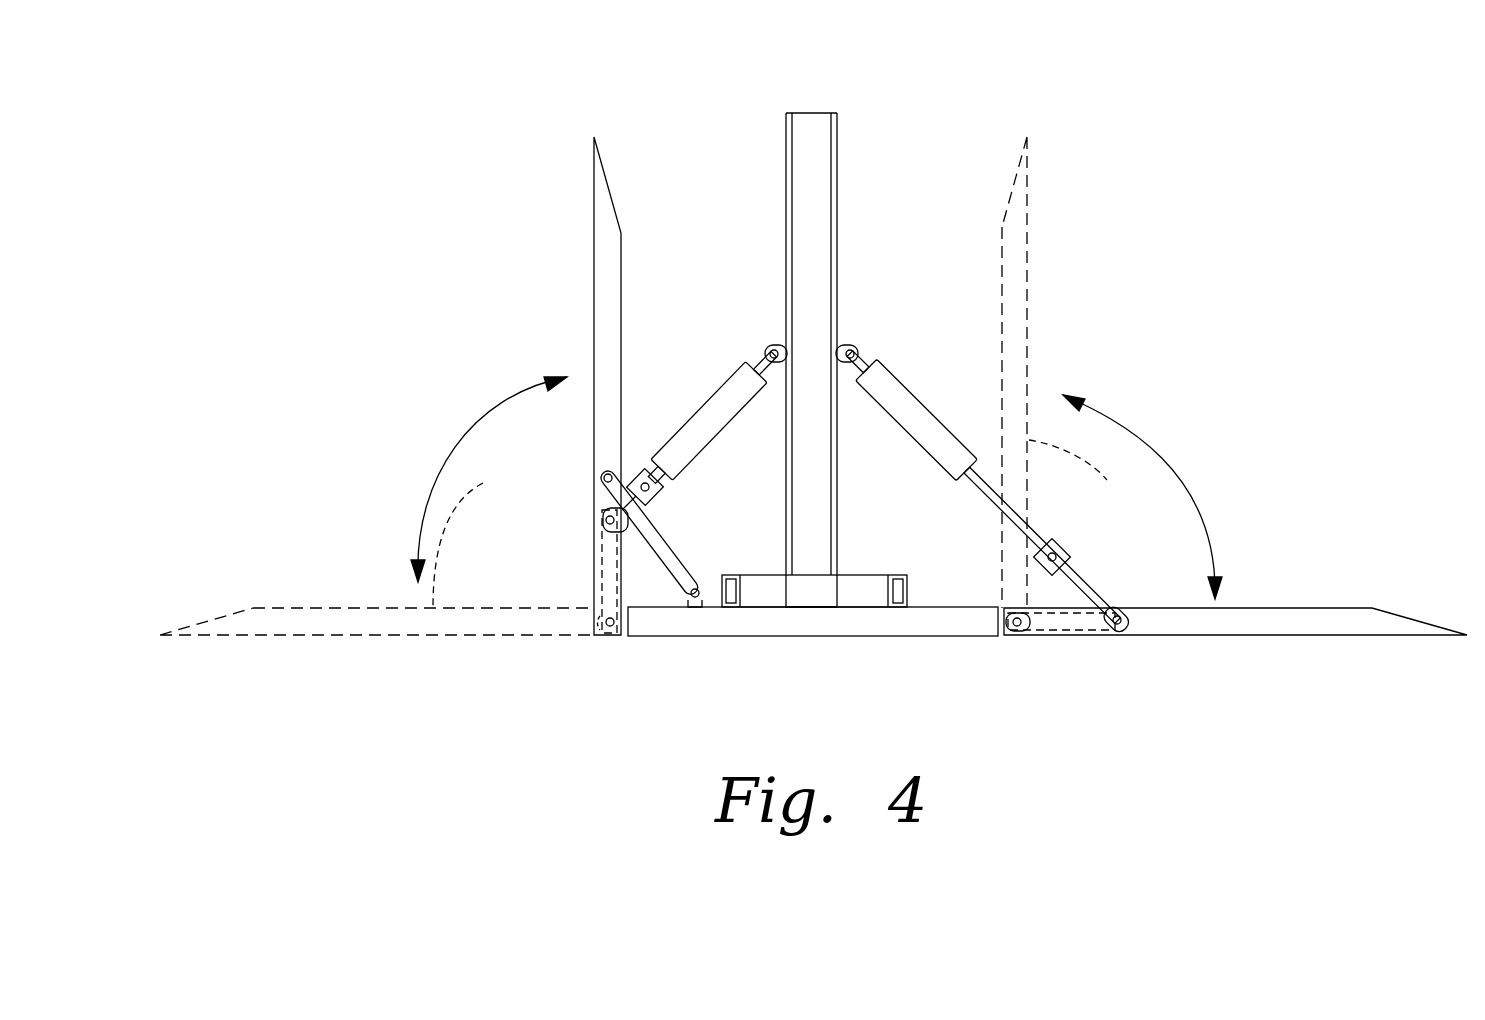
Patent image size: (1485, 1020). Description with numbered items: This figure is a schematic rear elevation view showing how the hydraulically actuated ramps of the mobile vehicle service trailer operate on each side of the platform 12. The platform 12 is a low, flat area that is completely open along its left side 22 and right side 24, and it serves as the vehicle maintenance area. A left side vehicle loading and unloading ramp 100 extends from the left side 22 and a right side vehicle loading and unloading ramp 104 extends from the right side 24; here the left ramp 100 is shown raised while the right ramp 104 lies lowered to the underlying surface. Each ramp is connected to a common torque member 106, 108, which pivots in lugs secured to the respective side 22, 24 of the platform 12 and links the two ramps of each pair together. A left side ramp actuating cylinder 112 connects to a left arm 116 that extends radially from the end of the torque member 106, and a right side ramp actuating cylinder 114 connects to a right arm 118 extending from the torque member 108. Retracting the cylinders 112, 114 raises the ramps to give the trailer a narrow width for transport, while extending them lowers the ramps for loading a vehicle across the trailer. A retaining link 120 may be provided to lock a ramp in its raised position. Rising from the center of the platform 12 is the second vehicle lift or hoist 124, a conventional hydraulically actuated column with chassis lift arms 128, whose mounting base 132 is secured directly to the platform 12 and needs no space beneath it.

The platform 12 is at (803, 637).
The left side 22 is at (628, 637).
The right side 24 is at (1004, 638).
The left side vehicle loading and unloading ramp 100 is at (594, 418).
The right side vehicle loading and unloading ramp 104 is at (1175, 608).
The torque member 106 is at (610, 630).
The torque member 108 is at (1013, 637).
The left side ramp actuating cylinder 112 is at (682, 420).
The right side ramp actuating cylinder 114 is at (912, 395).
The left arm 116 is at (602, 557).
The right arm 118 is at (1062, 632).
The retaining link 120 is at (663, 538).
The second vehicle lift or hoist 124 is at (837, 173).
The chassis lift arms 128 is at (860, 575).
The mounting base 132 is at (825, 608).